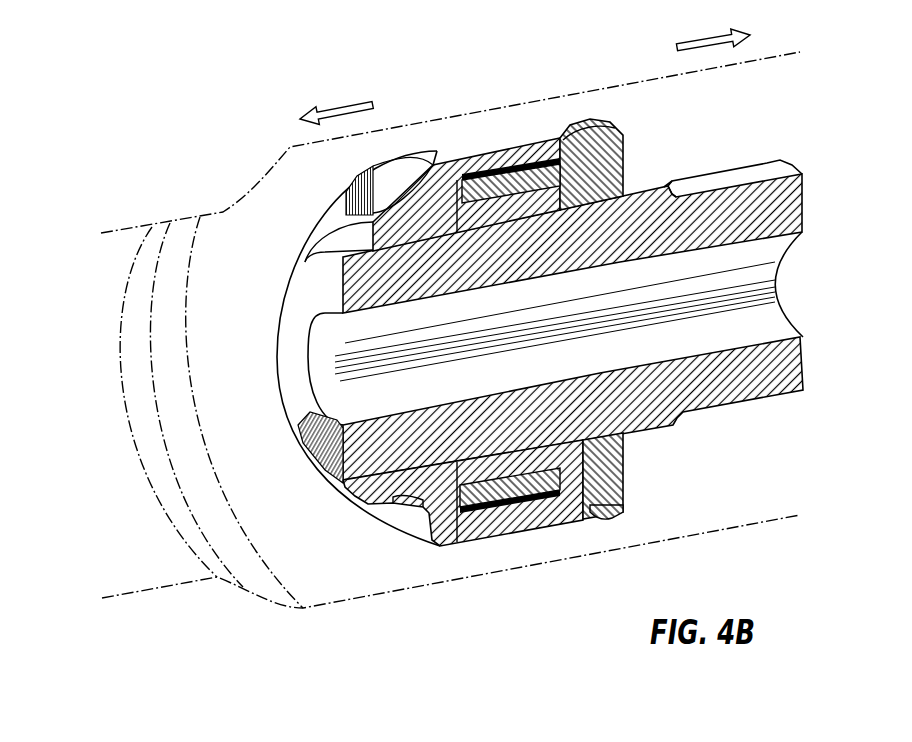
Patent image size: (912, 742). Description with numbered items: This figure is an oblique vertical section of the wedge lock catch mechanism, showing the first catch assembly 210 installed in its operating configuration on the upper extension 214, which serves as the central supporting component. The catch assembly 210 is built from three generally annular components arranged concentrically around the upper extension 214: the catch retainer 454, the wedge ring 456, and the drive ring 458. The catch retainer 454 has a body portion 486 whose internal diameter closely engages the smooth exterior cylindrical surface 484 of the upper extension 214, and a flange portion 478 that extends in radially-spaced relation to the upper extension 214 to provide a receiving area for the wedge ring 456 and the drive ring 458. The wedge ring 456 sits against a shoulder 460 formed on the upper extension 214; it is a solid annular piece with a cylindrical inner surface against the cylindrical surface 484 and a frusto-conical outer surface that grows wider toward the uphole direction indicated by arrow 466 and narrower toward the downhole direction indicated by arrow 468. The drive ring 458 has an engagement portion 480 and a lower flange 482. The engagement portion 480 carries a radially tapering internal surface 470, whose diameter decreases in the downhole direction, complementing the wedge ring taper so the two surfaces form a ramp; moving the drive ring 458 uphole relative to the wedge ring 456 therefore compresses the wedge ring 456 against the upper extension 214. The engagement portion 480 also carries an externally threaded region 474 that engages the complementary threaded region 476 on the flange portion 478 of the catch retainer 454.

The first catch assembly 210 is at (245, 160).
The upper extension 214 is at (758, 162).
The catch retainer 454 is at (446, 160).
The wedge ring 456 is at (626, 440).
The drive ring 458 is at (607, 520).
The shoulder 460 is at (651, 183).
The arrow indicating uphole direction 466 is at (347, 103).
The arrow indicating downhole direction 468 is at (708, 37).
The radially tapering internal surface 470 is at (527, 532).
The externally threaded region 474 is at (555, 527).
The threaded region 476 is at (482, 535).
The flange portion 478 is at (481, 172).
The engagement portion 480 is at (539, 182).
The lower flange 482 is at (614, 155).
The cylindrical surface 484 is at (337, 450).
The body portion 486 is at (397, 508).